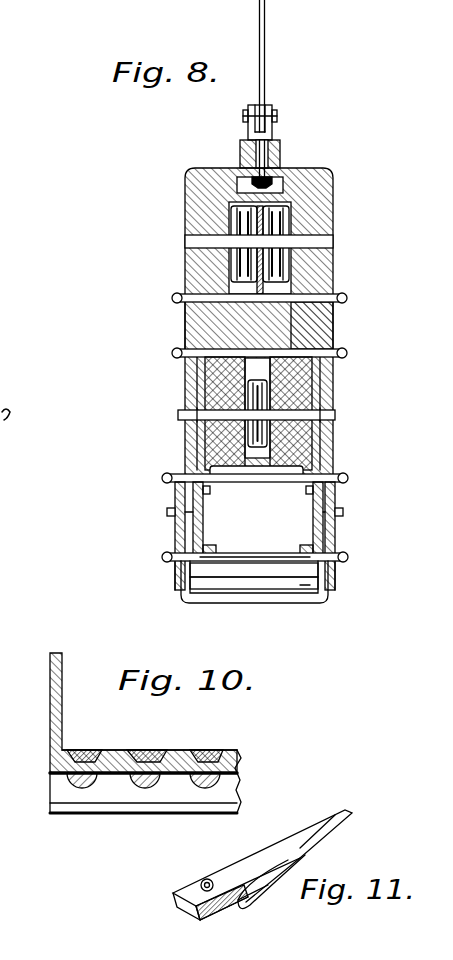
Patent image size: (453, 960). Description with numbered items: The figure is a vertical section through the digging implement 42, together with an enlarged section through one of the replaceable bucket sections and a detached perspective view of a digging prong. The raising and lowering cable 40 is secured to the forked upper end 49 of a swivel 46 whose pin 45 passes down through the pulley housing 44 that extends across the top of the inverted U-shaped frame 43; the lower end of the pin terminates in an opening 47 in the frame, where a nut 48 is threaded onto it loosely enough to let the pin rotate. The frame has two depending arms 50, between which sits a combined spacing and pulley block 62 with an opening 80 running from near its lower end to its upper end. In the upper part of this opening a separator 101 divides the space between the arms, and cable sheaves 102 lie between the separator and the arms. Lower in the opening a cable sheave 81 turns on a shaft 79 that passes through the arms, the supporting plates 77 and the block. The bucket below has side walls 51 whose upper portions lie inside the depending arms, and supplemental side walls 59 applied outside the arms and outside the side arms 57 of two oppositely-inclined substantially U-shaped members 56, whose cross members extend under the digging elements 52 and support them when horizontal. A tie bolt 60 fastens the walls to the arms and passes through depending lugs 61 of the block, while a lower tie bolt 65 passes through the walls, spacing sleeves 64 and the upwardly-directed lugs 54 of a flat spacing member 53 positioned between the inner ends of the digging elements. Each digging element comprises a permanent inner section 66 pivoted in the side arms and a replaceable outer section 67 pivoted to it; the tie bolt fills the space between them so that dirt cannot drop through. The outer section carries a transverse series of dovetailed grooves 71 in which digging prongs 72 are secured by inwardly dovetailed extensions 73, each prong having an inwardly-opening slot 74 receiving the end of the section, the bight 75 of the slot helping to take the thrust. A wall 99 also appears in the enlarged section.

In FIG. 8, the raising and lowering cable 40 is at (266, 78).
In FIG. 8, the digging implement 42 is at (185, 322).
In FIG. 8, the inverted U-shaped frame 43 is at (334, 272).
In FIG. 8, the pulley housing 44 is at (281, 152).
In FIG. 8, the pin 45 is at (258, 150).
In FIG. 8, the swivel 46 is at (247, 126).
In FIG. 8, the opening 47 is at (283, 184).
In FIG. 8, the nut 48 is at (248, 180).
In FIG. 8, the forked upper end 49 is at (273, 126).
In FIG. 8, the depending arms 50 is at (305, 332).
In FIG. 8, the side walls 51 is at (205, 500).
In FIG. 8, the digging elements 52 is at (235, 583).
In FIG. 10, the digging elements 52 is at (118, 750).
In FIG. 8, the spacing member 53 is at (275, 570).
In FIG. 8, the upwardly-directed lugs 54 is at (208, 551).
In FIG. 8, the substantially U-shaped members 56 is at (188, 603).
In FIG. 8, the side arms 57 is at (175, 575).
In FIG. 8, the supplemental side walls 59 is at (176, 533).
In FIG. 8, the tie bolt 60 is at (269, 479).
In FIG. 8, the depending lugs 61 is at (177, 494).
In FIG. 8, the combined spacing and pulley block 62 is at (228, 392).
In FIG. 8, the spacing sleeves 64 is at (175, 555).
In FIG. 8, the tie bolt 65 is at (256, 556).
In FIG. 8, the permanent sections 66 is at (300, 586).
In FIG. 10, the replaceable sections 67 is at (118, 803).
In FIG. 10, the dovetailed grooves 71 is at (178, 752).
In FIG. 11, the digging prongs 72 is at (330, 838).
In FIG. 10, the dovetailed extensions 73 is at (66, 754).
In FIG. 11, the dovetailed extensions 73 is at (228, 872).
In FIG. 10, the inwardly-opening slots 74 is at (82, 788).
In FIG. 11, the inwardly-opening slots 74 is at (268, 892).
In FIG. 11, the bights 75 is at (302, 867).
In FIG. 8, the supporting plates 77 is at (183, 420).
In FIG. 8, the shaft 79 is at (315, 388).
In FIG. 8, the opening 80 is at (265, 368).
In FIG. 8, the cable sheave 81 is at (268, 415).
In FIG. 10, the wall 99 is at (52, 700).
In FIG. 8, the separator 101 is at (258, 277).
In FIG. 8, the cable sheaves 102 is at (240, 222).